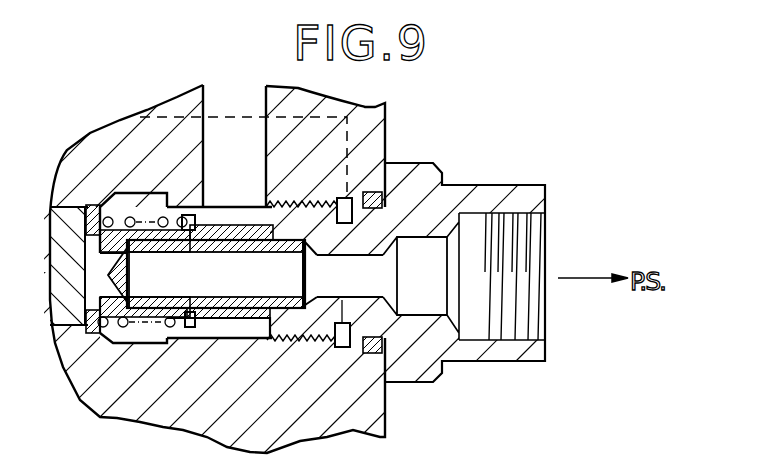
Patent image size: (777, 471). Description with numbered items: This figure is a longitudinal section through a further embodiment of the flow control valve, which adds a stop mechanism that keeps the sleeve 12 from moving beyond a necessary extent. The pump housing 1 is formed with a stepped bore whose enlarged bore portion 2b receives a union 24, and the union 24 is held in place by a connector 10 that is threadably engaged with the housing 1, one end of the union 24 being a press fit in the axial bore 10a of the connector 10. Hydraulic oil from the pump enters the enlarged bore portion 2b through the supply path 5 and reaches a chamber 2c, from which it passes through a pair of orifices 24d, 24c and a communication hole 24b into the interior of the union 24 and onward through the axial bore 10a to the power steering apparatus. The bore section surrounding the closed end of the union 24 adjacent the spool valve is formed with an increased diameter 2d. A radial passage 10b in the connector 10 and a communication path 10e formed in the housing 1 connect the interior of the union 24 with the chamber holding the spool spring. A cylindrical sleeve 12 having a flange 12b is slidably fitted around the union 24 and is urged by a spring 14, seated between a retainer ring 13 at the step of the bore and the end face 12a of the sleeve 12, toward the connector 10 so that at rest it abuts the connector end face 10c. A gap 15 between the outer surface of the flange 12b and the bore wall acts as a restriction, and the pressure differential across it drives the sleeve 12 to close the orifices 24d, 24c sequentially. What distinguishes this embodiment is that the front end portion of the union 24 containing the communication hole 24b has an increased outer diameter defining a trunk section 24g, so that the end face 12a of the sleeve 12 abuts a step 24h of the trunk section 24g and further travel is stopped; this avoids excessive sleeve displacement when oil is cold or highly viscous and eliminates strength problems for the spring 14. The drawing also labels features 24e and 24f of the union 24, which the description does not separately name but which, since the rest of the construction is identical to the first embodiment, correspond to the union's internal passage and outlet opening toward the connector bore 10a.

The pump housing 1 is at (362, 153).
The bore portion of increased diameter 2b is at (190, 330).
The chamber 2c is at (138, 195).
The increased diameter section 2d is at (117, 345).
The supply path 5 is at (268, 100).
The connector 10 is at (487, 185).
The axial bore of the connector 10a is at (372, 299).
The radial passage 10b is at (341, 348).
The end face of the connector 10c is at (268, 186).
The communication path 10e is at (190, 116).
The cylindrical sleeve 12 is at (247, 316).
The end face of the sleeve 12a is at (184, 214).
The flange 12b is at (212, 340).
The retainer ring 13 is at (94, 206).
The spring 14 is at (177, 345).
The gap 15 is at (226, 207).
The union 24 is at (228, 328).
The communication hole 24b is at (118, 210).
The orifice 24c is at (140, 330).
The orifice 24d is at (184, 247).
The spool end land 24e is at (283, 296).
The spool stem 24f is at (313, 302).
The trunk section 24g is at (113, 340).
The step 24h is at (144, 274).